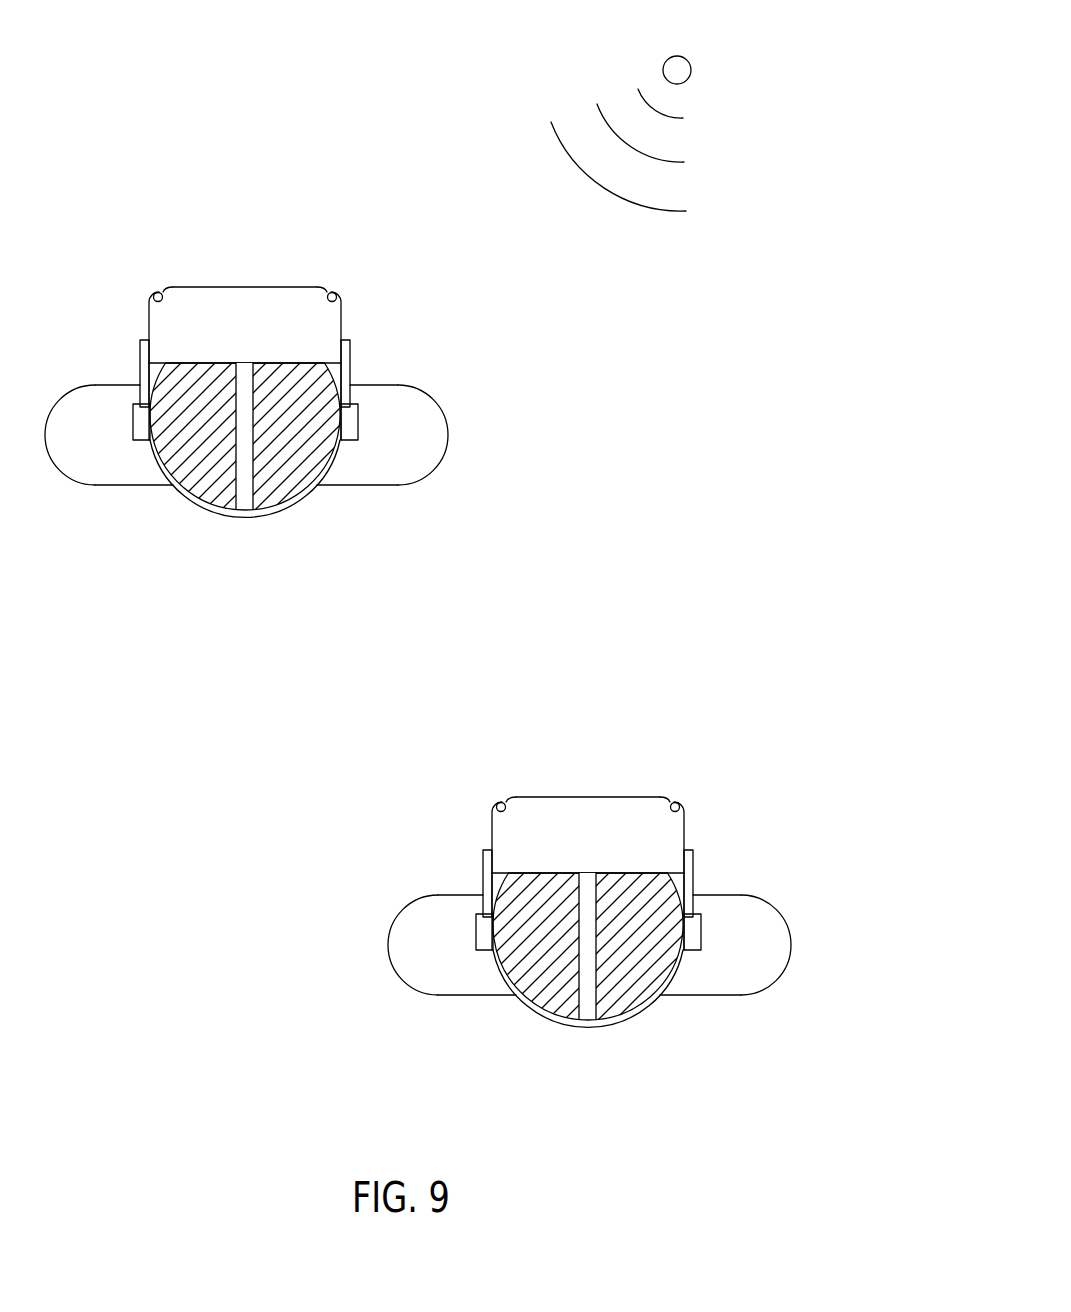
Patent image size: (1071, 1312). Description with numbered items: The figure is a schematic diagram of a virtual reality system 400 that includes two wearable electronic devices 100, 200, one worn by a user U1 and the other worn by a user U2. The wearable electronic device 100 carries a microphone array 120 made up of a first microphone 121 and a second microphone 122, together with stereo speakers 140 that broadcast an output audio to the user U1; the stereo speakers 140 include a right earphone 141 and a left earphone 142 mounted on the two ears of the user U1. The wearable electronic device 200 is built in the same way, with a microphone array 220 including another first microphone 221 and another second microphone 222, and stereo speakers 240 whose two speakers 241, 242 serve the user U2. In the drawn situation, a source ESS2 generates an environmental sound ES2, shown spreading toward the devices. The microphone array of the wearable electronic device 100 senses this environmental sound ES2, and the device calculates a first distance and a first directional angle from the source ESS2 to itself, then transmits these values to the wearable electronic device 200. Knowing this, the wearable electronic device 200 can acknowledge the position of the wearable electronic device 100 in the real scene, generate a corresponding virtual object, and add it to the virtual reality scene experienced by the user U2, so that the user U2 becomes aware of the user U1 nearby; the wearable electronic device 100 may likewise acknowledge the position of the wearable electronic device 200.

The virtual reality system 400 is at (105, 91).
The wearable electronic device 100 is at (148, 318).
The microphone array 120 is at (305, 230).
The first microphone 121 is at (310, 287).
The second microphone 122 is at (178, 287).
The stereo speakers 140 is at (352, 536).
The right earphone 141 is at (348, 440).
The left earphone 142 is at (142, 440).
The user U1 is at (398, 385).
The wearable electronic device 200 is at (569, 898).
The microphone array 220 is at (588, 756).
The first microphone 221 is at (657, 777).
The second microphone 222 is at (519, 777).
The stereo speakers 240 is at (591, 1005).
The speaker 241 is at (695, 980).
The speaker 242 is at (489, 980).
The user U2 is at (589, 910).
The source ESS2 is at (689, 59).
The environmental sound ES2 is at (663, 212).